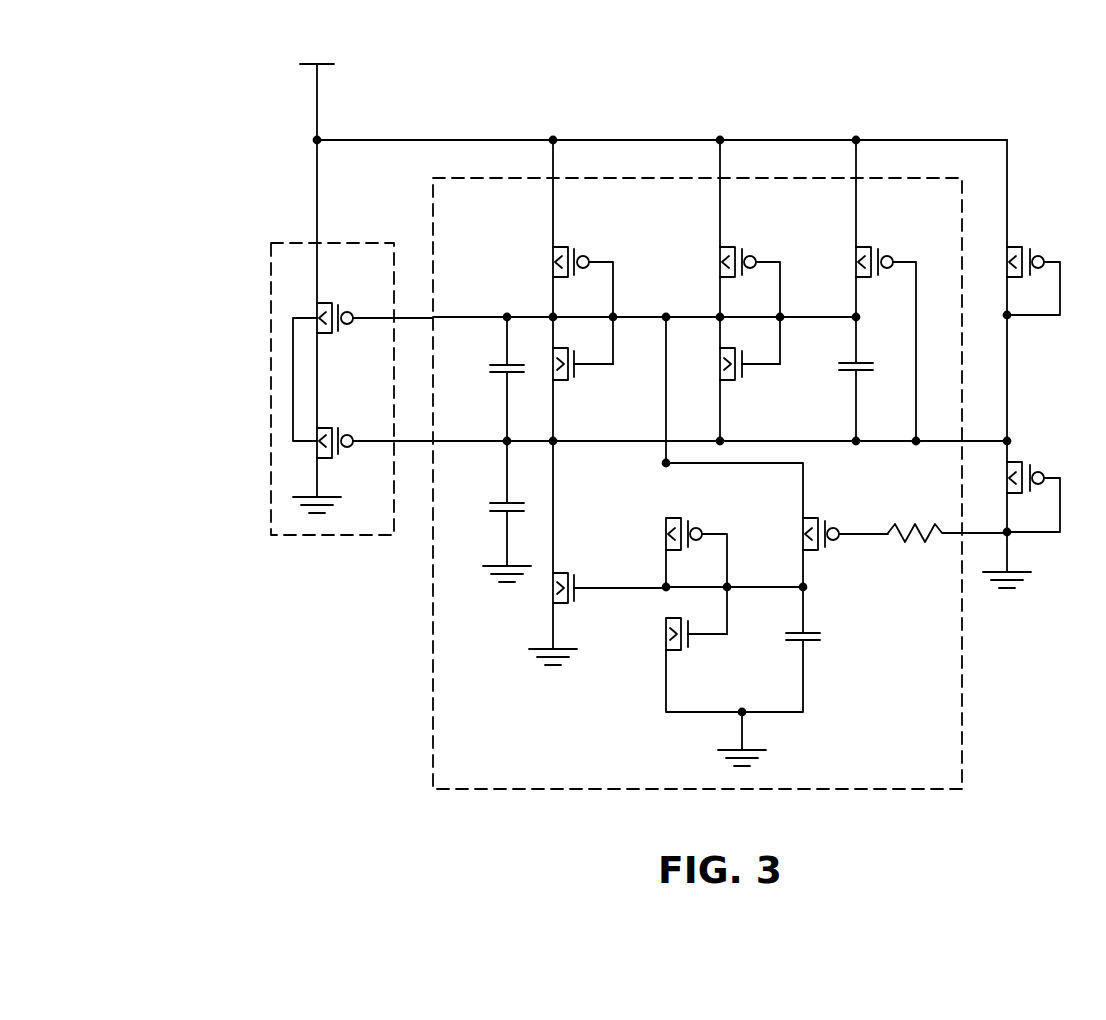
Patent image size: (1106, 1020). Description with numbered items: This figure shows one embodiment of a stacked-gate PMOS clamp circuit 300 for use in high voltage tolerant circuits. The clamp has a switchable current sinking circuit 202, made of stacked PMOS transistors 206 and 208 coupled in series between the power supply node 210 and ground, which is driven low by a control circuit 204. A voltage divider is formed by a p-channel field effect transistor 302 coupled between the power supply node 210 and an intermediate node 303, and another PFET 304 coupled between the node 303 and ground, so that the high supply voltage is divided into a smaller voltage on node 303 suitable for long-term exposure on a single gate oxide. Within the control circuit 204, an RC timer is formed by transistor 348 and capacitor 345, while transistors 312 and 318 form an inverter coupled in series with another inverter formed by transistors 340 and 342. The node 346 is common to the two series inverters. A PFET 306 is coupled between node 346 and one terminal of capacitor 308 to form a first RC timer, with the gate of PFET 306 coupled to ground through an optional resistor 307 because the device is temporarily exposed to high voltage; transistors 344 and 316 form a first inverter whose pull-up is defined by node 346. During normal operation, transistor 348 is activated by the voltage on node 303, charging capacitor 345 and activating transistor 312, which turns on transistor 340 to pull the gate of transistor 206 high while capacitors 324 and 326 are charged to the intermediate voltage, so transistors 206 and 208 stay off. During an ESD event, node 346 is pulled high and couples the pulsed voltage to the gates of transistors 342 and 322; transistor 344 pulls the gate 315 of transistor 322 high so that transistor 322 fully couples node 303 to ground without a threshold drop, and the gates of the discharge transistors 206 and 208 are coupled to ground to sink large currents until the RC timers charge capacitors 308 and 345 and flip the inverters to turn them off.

The switchable current sinking circuit 202 is at (271, 390).
The control circuit 204 is at (433, 645).
The PMOS transistor 206 is at (321, 303).
The PMOS transistor 208 is at (320, 428).
The power supply node 210 is at (320, 100).
The PMOS clamp circuit 300 is at (260, 642).
The p-channel field effect transistor 302 is at (1013, 247).
The intermediate node 303 is at (1009, 440).
The PFET 304 is at (1024, 462).
The PFET 306 is at (812, 518).
The resistor 307 is at (910, 543).
The capacitor 308 is at (796, 633).
The transistor 312 is at (729, 380).
The gate 315 is at (616, 591).
The transistor 316 is at (674, 650).
The transistor 318 is at (729, 247).
The transistor 322 is at (562, 573).
The capacitor 324 is at (500, 365).
The capacitor 326 is at (500, 503).
The PFET 340 is at (562, 247).
The transistor 342 is at (562, 380).
The transistor 344 is at (674, 518).
The capacitor 345 is at (846, 363).
The node 346 is at (666, 317).
The transistor 348 is at (865, 247).